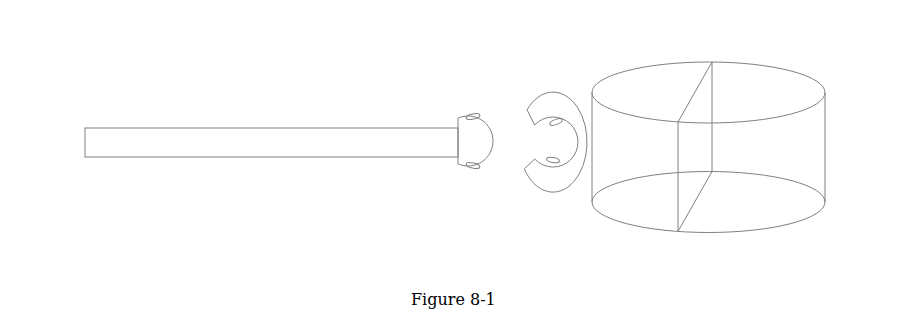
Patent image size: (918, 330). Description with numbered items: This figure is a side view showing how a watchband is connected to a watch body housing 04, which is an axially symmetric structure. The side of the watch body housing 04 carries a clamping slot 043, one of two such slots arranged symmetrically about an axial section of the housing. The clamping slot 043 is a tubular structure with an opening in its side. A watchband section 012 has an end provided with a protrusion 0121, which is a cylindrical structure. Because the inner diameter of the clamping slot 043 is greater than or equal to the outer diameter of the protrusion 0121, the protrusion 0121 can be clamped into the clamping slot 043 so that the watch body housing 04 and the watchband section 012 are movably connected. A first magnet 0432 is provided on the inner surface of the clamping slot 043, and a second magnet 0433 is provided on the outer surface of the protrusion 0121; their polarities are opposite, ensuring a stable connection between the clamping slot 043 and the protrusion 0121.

The watchband section 012 is at (318, 118).
The protrusion 0121 is at (459, 146).
The second magnet 0433 is at (470, 102).
The clamping slot 043 is at (531, 198).
The first magnet 0432 is at (575, 129).
The watch body housing 04 is at (609, 66).